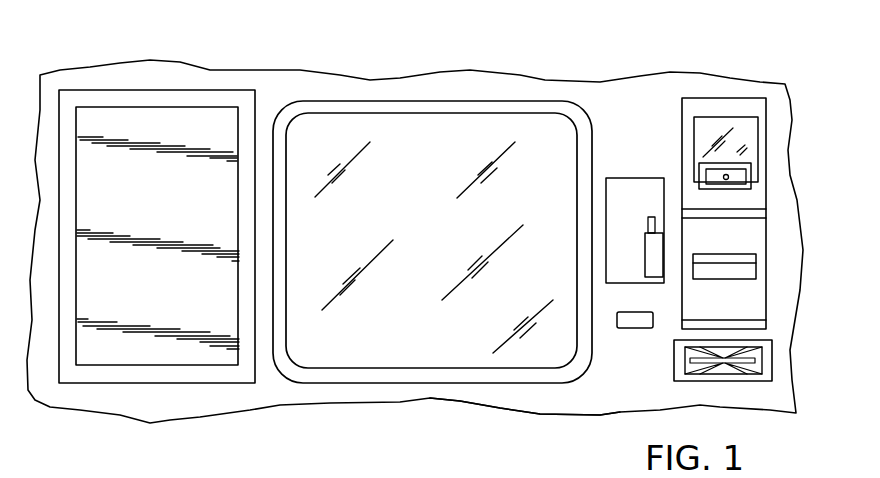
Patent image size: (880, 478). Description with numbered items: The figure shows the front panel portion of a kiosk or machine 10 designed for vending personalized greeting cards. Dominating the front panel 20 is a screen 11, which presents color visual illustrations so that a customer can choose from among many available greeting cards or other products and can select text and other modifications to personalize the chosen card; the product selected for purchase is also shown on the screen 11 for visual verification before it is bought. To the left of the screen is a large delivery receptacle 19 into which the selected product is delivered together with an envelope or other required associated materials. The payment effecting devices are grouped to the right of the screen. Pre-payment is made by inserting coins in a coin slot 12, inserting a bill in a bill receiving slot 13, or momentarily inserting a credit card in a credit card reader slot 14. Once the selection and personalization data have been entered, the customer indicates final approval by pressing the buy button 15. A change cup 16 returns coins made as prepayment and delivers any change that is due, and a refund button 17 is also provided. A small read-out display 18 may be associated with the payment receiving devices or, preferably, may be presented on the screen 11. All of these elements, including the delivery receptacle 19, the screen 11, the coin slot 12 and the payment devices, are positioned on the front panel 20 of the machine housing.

The machine 10 is at (729, 62).
The screen 11 is at (527, 122).
The coin slot 12 is at (650, 217).
The bill receiving slot 13 is at (752, 259).
The credit card reader slot 14 is at (753, 360).
The buy button 15 is at (741, 177).
The change cup 16 is at (655, 263).
The refund button 17 is at (641, 324).
The read-out display 18 is at (750, 143).
The delivery receptacle 19 is at (228, 90).
The front panel 20 is at (565, 408).